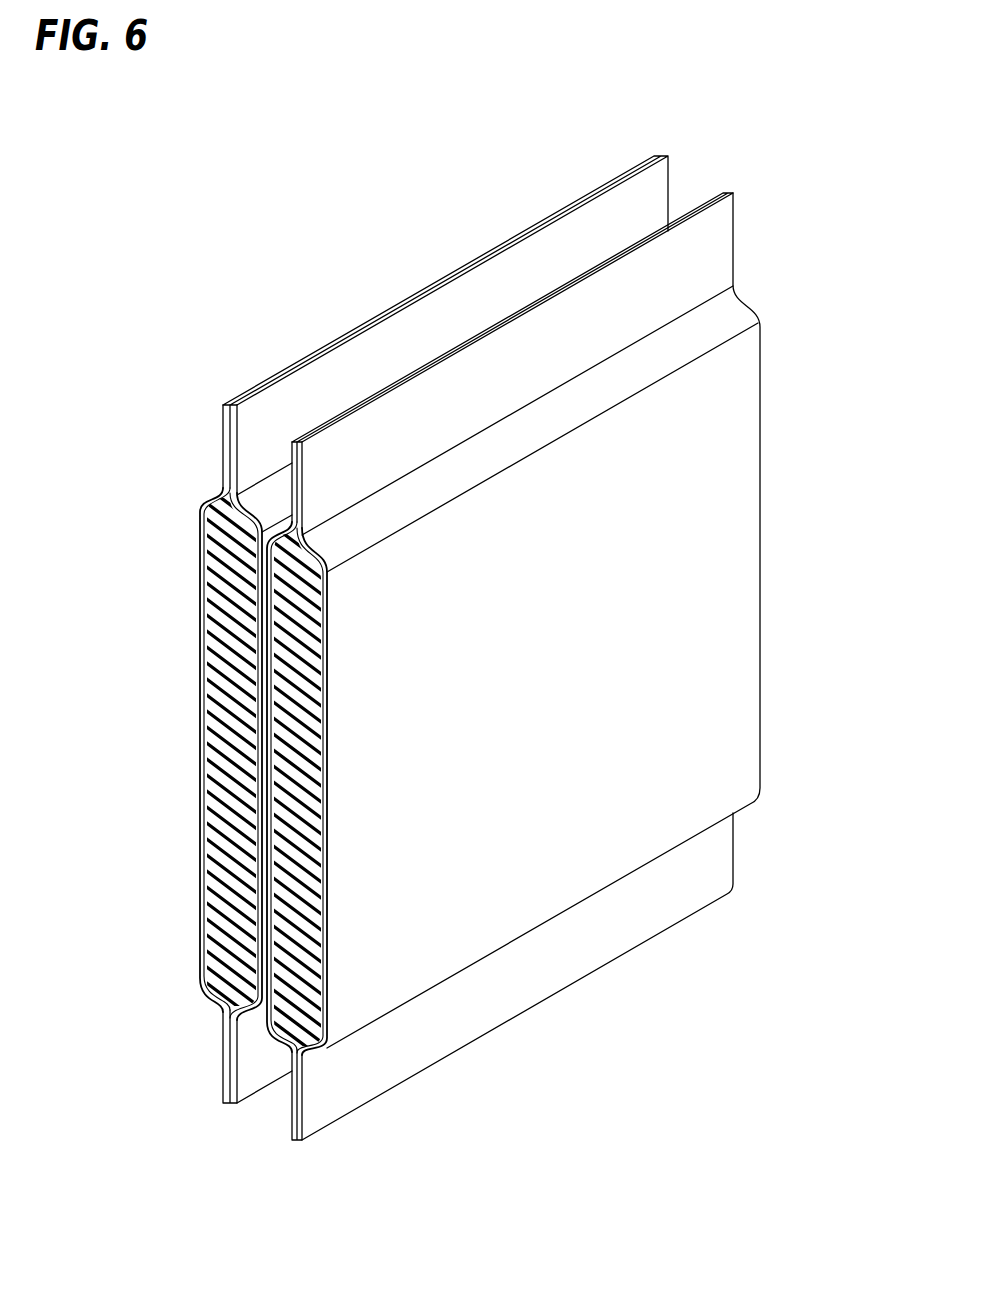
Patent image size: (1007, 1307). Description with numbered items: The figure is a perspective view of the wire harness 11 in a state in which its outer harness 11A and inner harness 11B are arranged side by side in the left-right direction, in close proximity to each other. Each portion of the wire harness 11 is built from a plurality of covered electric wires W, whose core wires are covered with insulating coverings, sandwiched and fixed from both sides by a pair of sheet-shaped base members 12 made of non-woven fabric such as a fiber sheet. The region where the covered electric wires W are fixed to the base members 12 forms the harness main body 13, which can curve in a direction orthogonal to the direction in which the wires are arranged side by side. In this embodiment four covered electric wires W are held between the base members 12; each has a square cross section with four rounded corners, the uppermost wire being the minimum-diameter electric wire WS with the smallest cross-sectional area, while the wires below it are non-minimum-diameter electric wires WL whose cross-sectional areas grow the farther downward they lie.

The wire harness 11 is at (471, 648).
The outer harness 11A is at (698, 740).
The inner harness 11B is at (188, 544).
The base member 12 is at (290, 520).
The harness main body 13 is at (188, 733).
The covered electric wire W is at (210, 772).
The minimum-diameter electric wire WS is at (297, 588).
The non-minimum-diameter electric wire WL is at (300, 930).